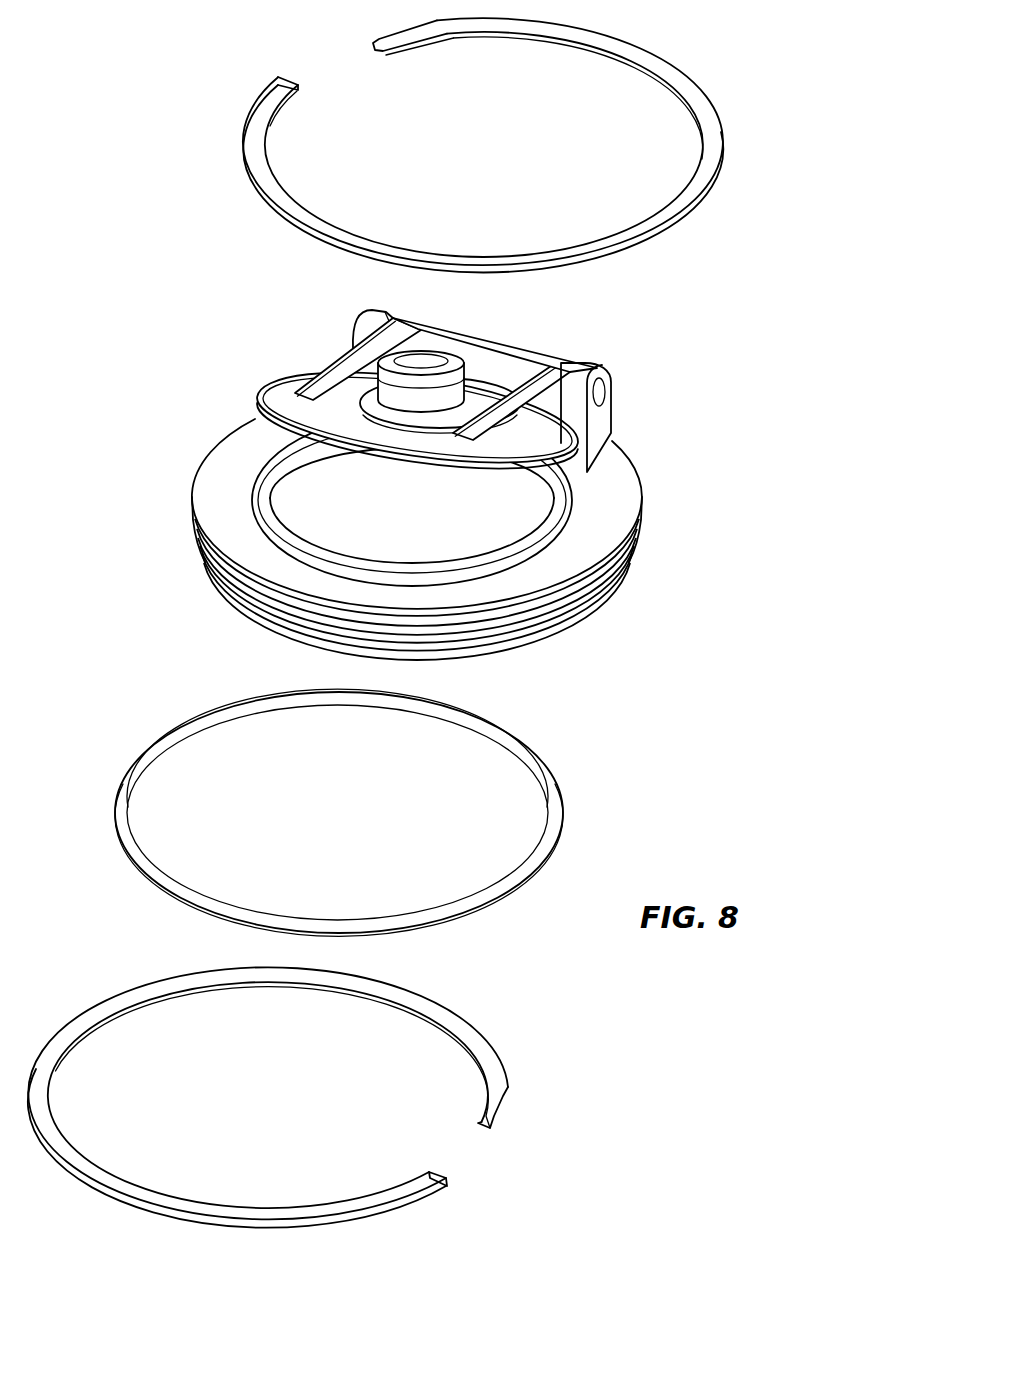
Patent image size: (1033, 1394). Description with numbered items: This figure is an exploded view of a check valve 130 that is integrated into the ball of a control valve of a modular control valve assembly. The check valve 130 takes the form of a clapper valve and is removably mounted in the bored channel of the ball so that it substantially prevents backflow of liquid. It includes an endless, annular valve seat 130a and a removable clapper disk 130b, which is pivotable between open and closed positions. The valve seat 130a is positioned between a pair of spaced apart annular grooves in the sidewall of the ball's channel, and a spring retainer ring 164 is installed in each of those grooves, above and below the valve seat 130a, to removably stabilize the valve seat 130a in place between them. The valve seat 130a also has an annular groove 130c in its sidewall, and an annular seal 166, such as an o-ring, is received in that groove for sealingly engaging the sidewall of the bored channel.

The spring retainer ring 164 is at (631, 45).
The annular seal 166 is at (512, 736).
The check valve 130 is at (426, 485).
The valve seat 130a is at (607, 510).
The clapper disk 130b is at (283, 372).
The annular groove 130c is at (226, 585).